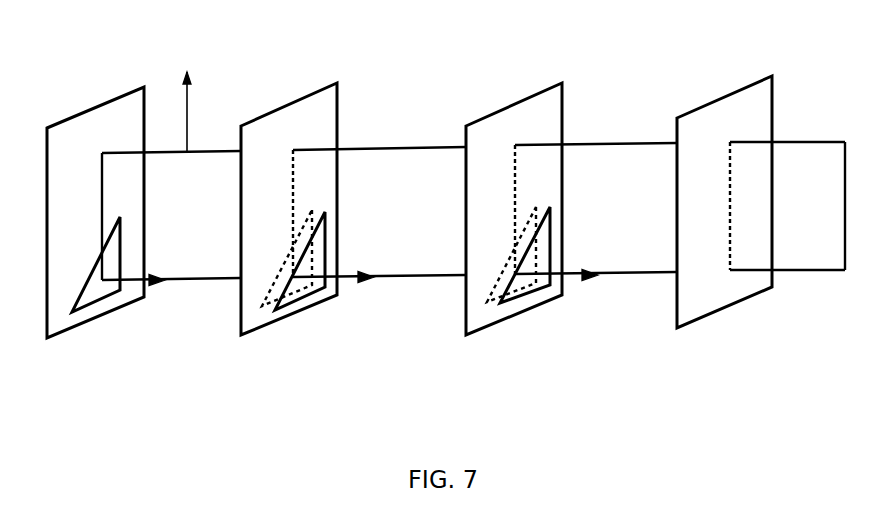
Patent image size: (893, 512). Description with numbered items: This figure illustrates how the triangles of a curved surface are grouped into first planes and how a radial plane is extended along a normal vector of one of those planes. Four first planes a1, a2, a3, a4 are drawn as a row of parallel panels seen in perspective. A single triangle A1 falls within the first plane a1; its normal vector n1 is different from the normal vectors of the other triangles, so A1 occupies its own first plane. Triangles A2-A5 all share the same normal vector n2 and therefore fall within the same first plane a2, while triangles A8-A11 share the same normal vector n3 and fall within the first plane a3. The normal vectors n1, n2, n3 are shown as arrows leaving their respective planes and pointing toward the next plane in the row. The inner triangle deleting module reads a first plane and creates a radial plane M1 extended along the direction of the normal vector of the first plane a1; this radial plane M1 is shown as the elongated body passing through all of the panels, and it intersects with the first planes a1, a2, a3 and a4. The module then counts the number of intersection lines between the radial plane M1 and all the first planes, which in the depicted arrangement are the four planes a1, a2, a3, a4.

The first plane a1 is at (88, 113).
The first plane a2 is at (292, 100).
The first plane a3 is at (510, 100).
The first plane a4 is at (720, 97).
The radial plane M1 is at (203, 101).
The normal vector n1 is at (171, 271).
The normal vector n2 is at (379, 267).
The normal vector n3 is at (596, 262).
The triangle A1 is at (98, 303).
The triangles A2-A5 is at (325, 220).
The triangles A8-A11 is at (552, 213).